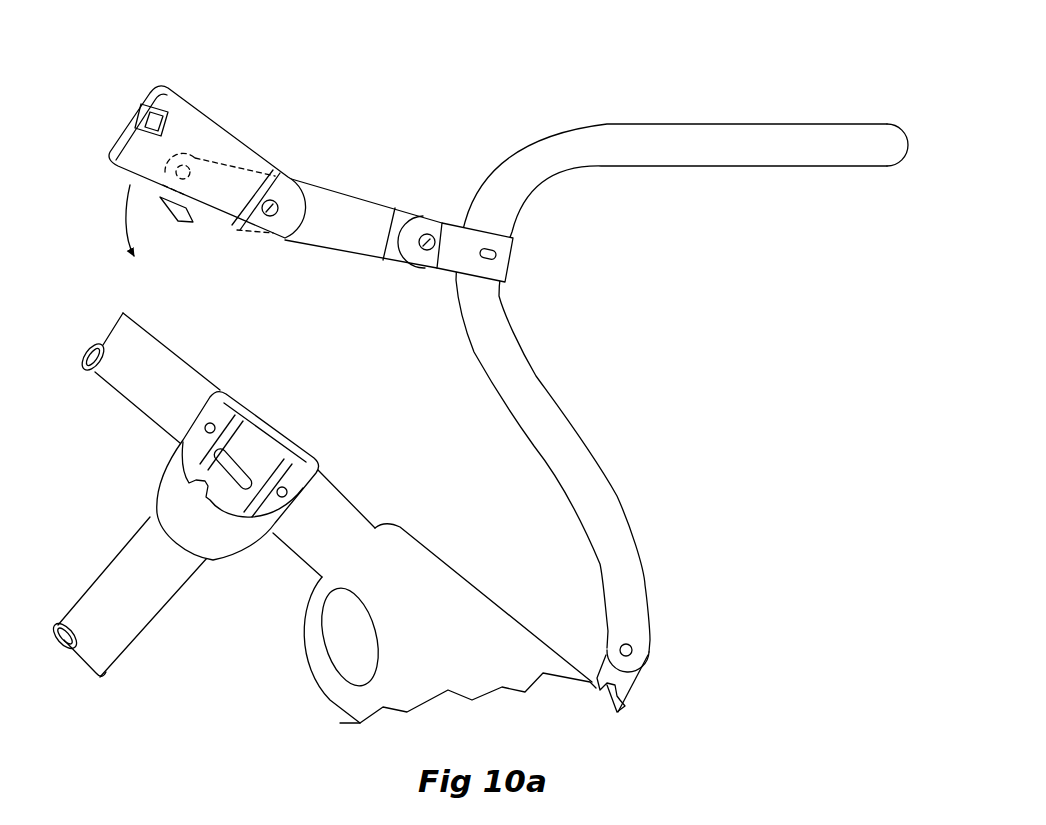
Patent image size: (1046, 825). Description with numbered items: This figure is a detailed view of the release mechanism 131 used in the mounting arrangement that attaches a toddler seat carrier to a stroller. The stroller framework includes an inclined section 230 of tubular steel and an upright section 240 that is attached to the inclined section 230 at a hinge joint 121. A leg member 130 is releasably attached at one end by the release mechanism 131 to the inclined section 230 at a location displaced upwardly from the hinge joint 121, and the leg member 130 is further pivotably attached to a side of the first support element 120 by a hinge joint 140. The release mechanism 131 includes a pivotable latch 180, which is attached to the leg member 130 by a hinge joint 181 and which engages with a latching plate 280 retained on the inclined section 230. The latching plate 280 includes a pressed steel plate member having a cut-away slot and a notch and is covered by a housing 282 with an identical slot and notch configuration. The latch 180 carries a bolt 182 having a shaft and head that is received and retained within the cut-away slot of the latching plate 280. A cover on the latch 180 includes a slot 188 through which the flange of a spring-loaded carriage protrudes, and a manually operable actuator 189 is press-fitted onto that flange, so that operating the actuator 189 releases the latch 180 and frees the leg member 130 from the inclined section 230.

The first support element 120 is at (730, 145).
The hinge joint 121 is at (633, 650).
The leg member 130 is at (352, 217).
The release mechanism 131 is at (250, 114).
The hinge joint 140 is at (423, 242).
The pivotable latch 180 is at (137, 110).
The hinge joint 181 is at (273, 214).
The bolt 182 is at (193, 187).
The slot 188 is at (163, 108).
The manually operable actuator 189 is at (142, 133).
The inclined section 230 is at (162, 382).
The upright section 240 is at (140, 573).
The latching plate 280 is at (229, 574).
The housing 282 is at (247, 453).